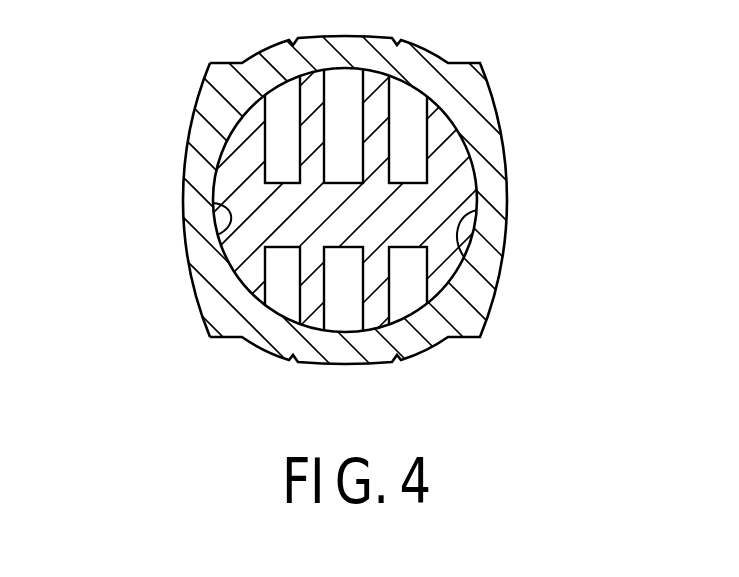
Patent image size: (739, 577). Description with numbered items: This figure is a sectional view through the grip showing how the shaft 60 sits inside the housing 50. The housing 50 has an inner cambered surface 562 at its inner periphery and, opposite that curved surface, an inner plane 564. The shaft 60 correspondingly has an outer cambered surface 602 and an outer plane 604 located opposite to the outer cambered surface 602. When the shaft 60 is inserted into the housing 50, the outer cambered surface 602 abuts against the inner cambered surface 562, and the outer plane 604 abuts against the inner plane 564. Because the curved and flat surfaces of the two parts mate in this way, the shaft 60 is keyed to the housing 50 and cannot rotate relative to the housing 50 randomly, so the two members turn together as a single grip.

The housing 50 is at (473, 100).
The inner cambered surface 562 is at (193, 141).
The inner plane 564 is at (467, 173).
The shaft 60 is at (437, 280).
The outer cambered surface 602 is at (213, 242).
The outer plane 604 is at (468, 257).